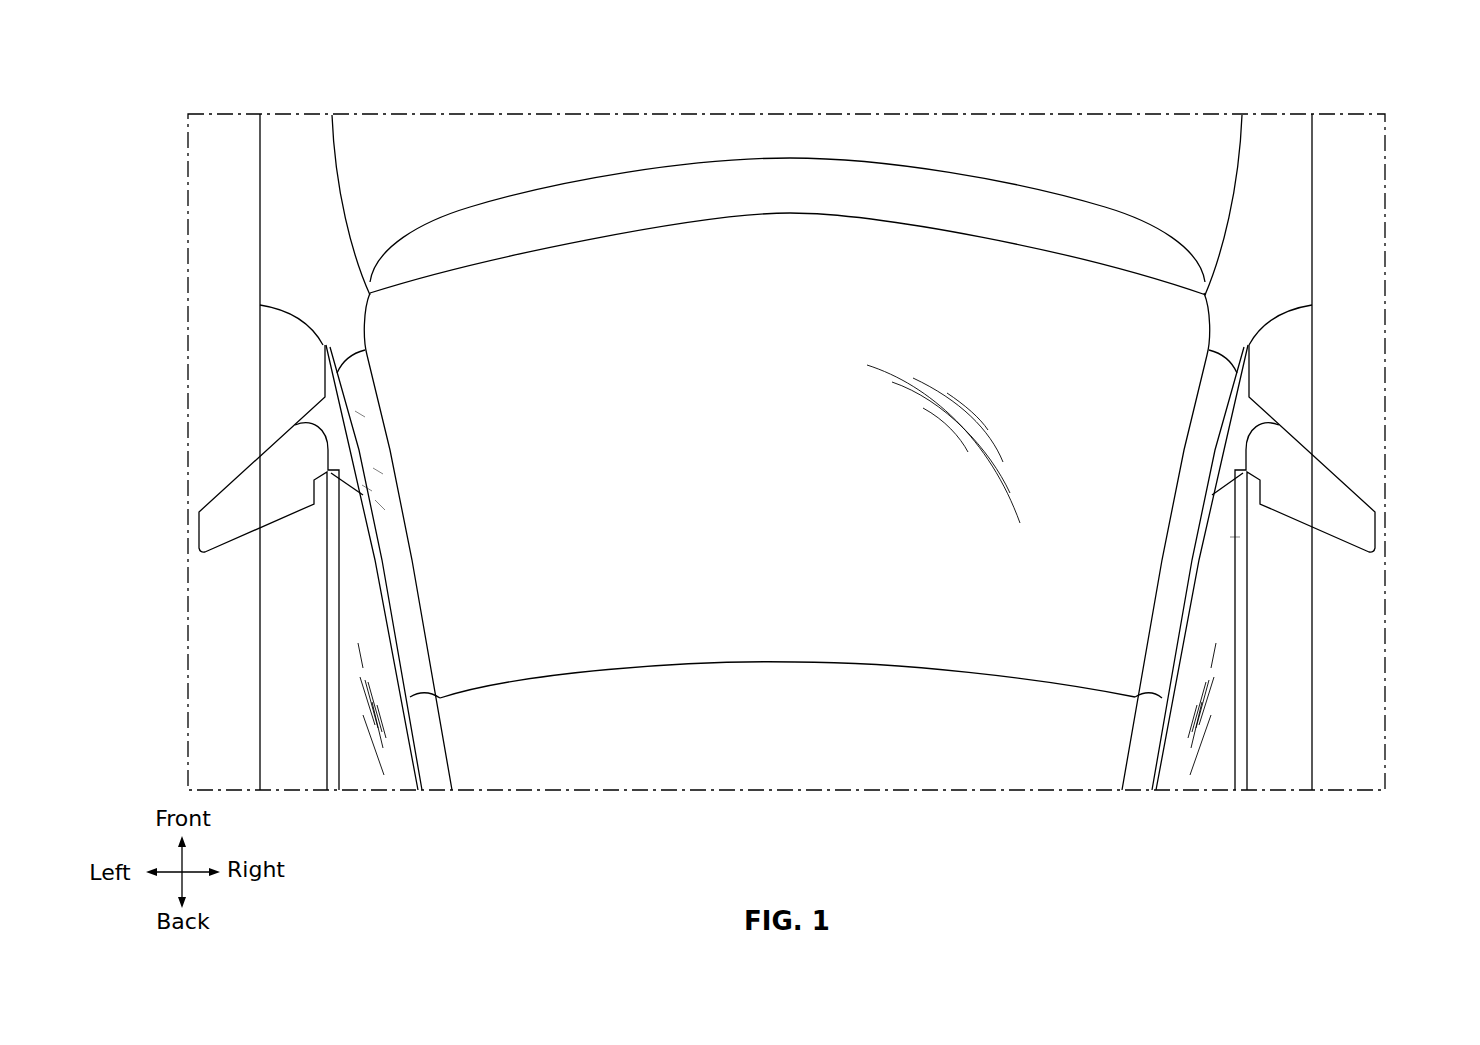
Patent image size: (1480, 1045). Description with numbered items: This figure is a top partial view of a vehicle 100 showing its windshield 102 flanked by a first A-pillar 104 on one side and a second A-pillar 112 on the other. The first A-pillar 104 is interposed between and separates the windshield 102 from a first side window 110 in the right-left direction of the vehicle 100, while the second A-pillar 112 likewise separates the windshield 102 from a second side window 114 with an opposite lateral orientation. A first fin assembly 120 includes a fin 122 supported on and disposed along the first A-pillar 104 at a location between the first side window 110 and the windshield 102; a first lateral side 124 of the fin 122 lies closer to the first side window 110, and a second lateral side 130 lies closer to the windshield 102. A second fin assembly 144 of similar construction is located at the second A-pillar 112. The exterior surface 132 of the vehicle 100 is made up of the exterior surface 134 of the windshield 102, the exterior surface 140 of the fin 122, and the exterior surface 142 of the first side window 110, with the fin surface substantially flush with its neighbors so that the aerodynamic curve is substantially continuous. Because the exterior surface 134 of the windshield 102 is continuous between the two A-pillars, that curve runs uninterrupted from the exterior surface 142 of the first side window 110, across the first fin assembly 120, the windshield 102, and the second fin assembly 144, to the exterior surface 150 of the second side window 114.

The vehicle 100 is at (249, 597).
The windshield 102 is at (595, 615).
The first A-pillar 104 is at (415, 603).
The first side window 110 is at (350, 588).
The second A-pillar 112 is at (1163, 617).
The second side window 114 is at (1207, 687).
The first fin assembly 120 is at (358, 548).
The fin 122 is at (385, 510).
The first lateral side 124 is at (372, 491).
The second lateral side 130 is at (383, 474).
The exterior surface of the vehicle 132 is at (565, 383).
The exterior surface of the windshield 134 is at (995, 615).
The exterior surface of the fin 140 is at (365, 417).
The exterior surface of the first side window 142 is at (353, 705).
The second fin assembly 144 is at (1216, 537).
The exterior surface of the second side window 150 is at (1217, 575).